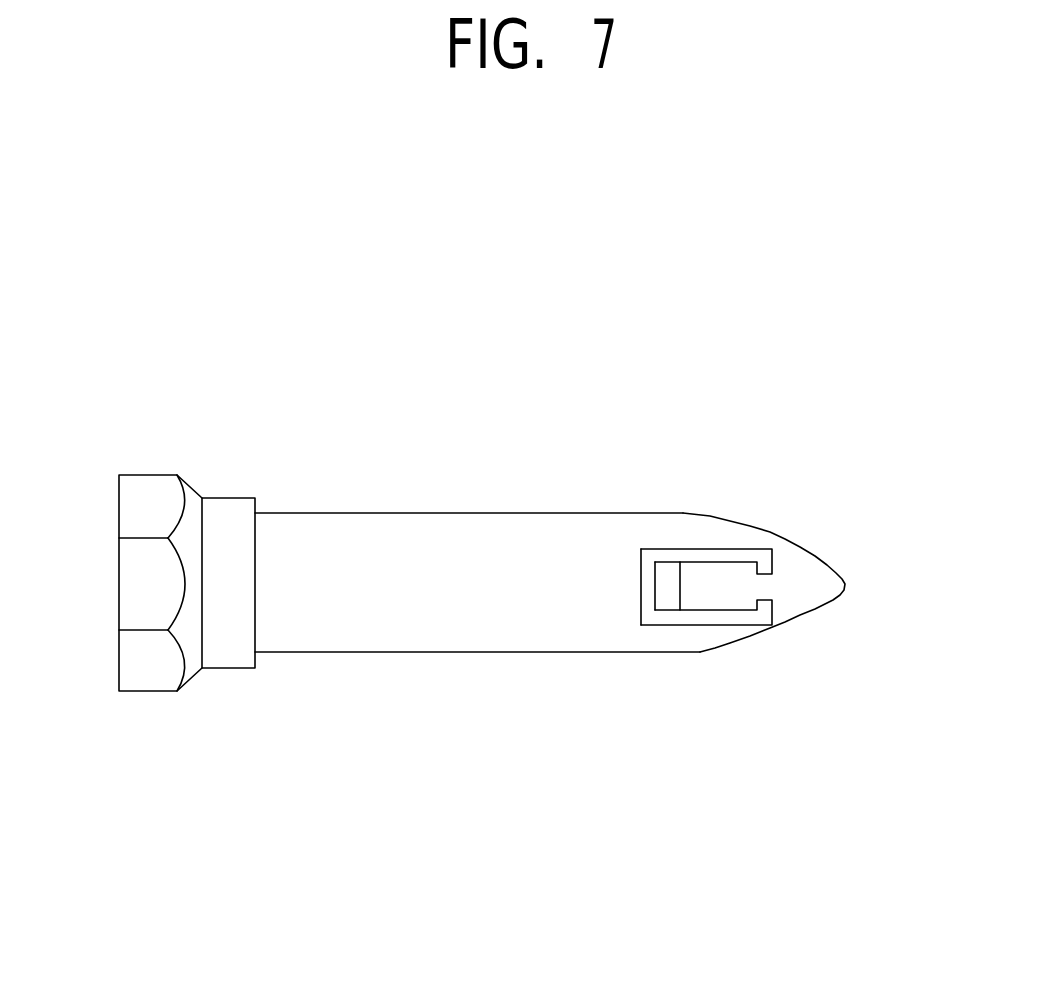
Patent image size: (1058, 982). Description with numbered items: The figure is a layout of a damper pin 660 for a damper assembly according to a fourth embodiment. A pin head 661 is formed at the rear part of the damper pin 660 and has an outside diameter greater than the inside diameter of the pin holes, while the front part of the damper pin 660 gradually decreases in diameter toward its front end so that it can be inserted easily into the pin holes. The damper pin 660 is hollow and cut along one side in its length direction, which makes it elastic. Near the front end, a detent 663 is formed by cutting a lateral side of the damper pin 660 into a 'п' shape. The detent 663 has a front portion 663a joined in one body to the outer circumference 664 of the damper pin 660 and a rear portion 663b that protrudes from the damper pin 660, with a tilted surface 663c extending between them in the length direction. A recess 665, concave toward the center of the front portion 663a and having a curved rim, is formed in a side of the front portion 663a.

The damper pin 660 is at (599, 564).
The pin head 661 is at (147, 487).
The detent 663 is at (765, 604).
The front portion 663a is at (774, 588).
The rear portion 663b is at (668, 592).
The tilted surface 663c is at (712, 575).
The outer circumference 664 is at (483, 613).
The recess 665 is at (766, 565).